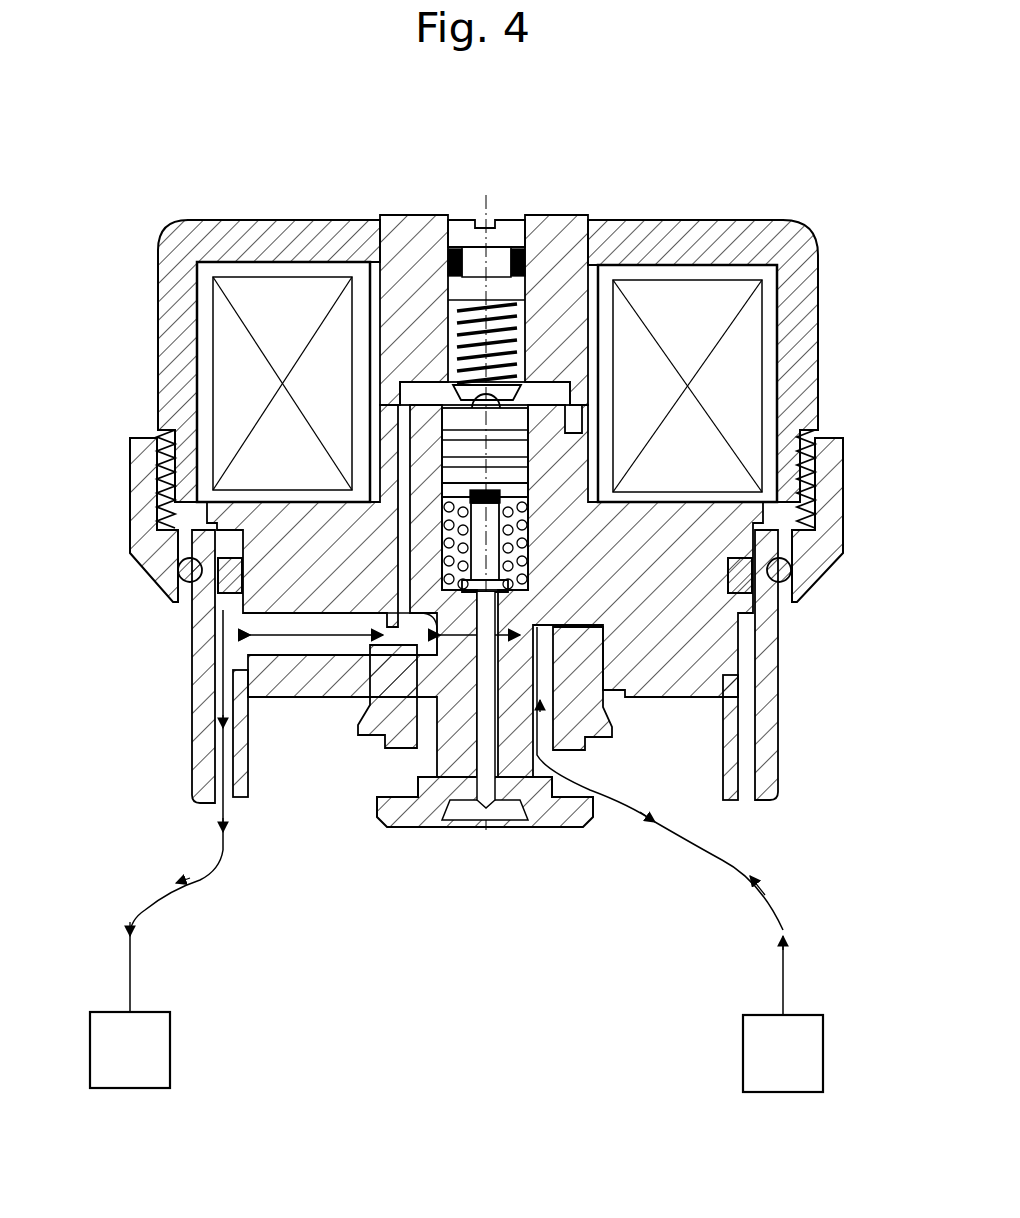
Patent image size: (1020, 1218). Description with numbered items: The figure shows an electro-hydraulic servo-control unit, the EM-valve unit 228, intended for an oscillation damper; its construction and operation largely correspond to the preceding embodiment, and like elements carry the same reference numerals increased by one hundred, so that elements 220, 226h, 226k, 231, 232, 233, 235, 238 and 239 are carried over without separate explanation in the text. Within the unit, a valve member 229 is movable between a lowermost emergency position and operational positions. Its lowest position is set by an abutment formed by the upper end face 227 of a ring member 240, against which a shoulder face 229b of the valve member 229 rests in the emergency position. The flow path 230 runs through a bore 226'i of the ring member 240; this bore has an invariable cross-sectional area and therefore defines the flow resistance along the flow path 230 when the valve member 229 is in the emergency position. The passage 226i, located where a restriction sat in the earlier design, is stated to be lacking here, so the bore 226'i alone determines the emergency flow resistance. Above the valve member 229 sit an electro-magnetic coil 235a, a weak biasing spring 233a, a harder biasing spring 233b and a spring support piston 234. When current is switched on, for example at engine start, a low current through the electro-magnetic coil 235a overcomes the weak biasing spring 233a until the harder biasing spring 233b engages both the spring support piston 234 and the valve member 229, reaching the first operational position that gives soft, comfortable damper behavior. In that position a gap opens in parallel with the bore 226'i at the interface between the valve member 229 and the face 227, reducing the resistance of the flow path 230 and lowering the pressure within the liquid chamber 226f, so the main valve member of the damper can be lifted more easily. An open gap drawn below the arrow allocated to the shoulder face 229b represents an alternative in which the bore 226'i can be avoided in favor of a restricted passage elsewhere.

The pressure source / reservoir 220 is at (135, 1080).
The liquid chamber 226f is at (770, 1090).
The outlet passage 226h is at (680, 773).
The passage 226i is at (380, 703).
The bore 226'i is at (626, 694).
The inlet passage 226k is at (263, 622).
The upper end face 227 is at (560, 622).
The EM-valve unit 228 is at (838, 407).
The valve member 229 is at (547, 413).
The shoulder face 229b is at (420, 620).
The flow path 230 is at (197, 873).
The housing cover 231 is at (648, 247).
The closure flange 232 is at (397, 763).
The valve spring 233 is at (528, 515).
The weak biasing spring 233a is at (445, 495).
The harder biasing spring 233b is at (445, 518).
The spring support piston 234 is at (450, 413).
The housing yoke 235 is at (722, 273).
The electro-magnetic coil 235a is at (703, 320).
The nut 238 is at (405, 545).
The adjusting plug 239 is at (505, 237).
The ring member 240 is at (587, 740).